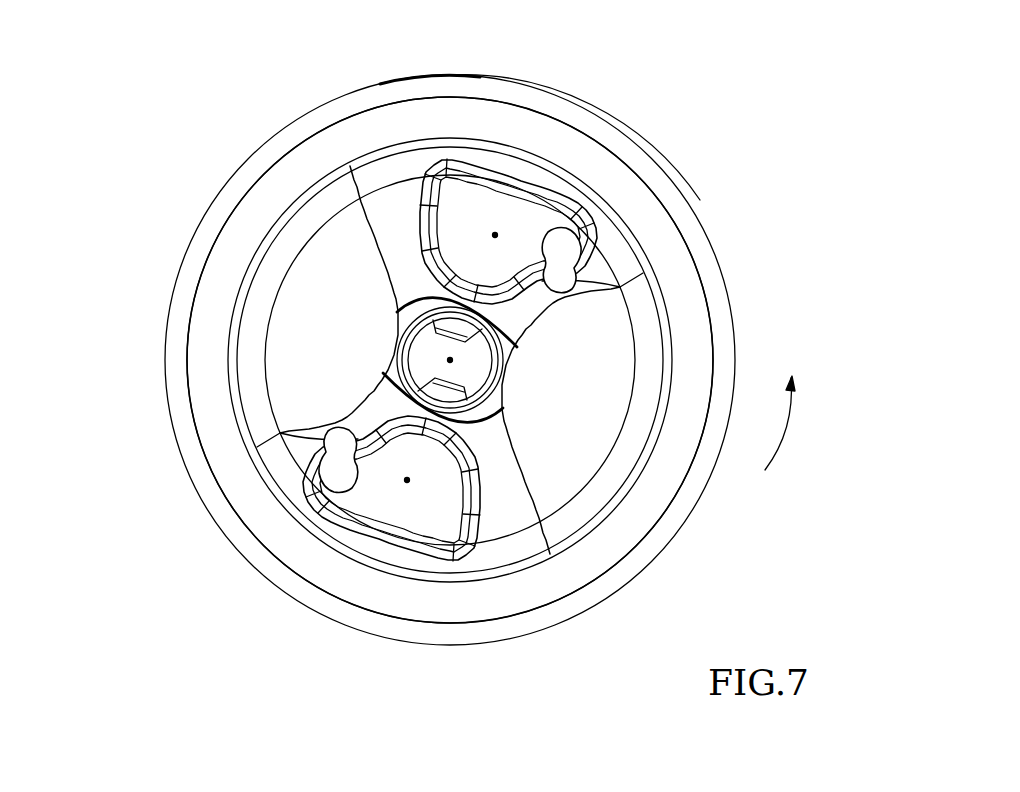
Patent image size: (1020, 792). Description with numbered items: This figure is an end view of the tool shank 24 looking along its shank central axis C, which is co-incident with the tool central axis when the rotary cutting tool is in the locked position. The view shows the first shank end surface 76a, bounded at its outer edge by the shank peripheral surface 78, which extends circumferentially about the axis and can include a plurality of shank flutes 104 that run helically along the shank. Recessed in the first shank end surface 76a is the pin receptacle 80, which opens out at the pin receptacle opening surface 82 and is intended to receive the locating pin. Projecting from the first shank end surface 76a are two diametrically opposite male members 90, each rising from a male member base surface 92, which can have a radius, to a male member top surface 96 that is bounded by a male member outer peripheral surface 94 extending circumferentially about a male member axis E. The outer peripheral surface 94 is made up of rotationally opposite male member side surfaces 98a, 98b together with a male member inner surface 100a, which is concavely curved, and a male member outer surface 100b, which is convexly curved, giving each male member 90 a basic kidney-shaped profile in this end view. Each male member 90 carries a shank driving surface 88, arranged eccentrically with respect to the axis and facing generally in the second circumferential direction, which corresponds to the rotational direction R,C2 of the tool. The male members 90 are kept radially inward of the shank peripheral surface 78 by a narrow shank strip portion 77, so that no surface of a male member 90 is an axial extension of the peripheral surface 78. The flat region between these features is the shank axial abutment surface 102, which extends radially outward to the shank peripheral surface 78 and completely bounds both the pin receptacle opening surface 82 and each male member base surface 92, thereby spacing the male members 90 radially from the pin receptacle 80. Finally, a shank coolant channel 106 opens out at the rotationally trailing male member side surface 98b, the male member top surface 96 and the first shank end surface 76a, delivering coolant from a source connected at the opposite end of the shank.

The tool shank 24 is at (153, 222).
The first shank end surface 76a is at (393, 183).
The narrow shank strip portion 77 is at (587, 153).
The shank peripheral surface 78 is at (677, 282).
The pin receptacle 80 is at (413, 362).
The pin receptacle opening surface 82 is at (400, 328).
The shank driving surface 88 is at (418, 238).
The male member 90 is at (575, 145).
The male member base surface 92 is at (560, 215).
The male member outer peripheral surface 94 is at (560, 195).
The male member top surface 96 is at (420, 212).
The male member side surface 98a is at (350, 166).
The male member side surface 98b is at (576, 246).
The male member inner surface 100a is at (525, 315).
The male member outer surface 100b is at (510, 213).
The shank axial abutment surface 102 is at (560, 560).
The shank flute 104 is at (602, 380).
The shank coolant channel 106 is at (618, 288).
The shank central axis C is at (452, 359).
The male member axis E is at (495, 233).
The rotational direction and second circumferential direction R,C2 is at (808, 413).